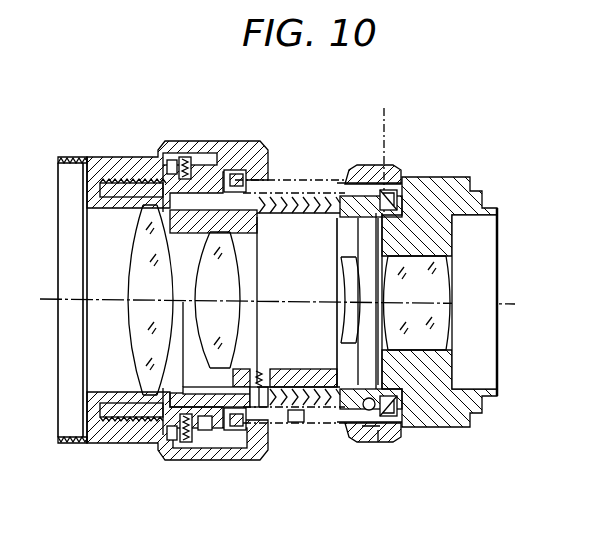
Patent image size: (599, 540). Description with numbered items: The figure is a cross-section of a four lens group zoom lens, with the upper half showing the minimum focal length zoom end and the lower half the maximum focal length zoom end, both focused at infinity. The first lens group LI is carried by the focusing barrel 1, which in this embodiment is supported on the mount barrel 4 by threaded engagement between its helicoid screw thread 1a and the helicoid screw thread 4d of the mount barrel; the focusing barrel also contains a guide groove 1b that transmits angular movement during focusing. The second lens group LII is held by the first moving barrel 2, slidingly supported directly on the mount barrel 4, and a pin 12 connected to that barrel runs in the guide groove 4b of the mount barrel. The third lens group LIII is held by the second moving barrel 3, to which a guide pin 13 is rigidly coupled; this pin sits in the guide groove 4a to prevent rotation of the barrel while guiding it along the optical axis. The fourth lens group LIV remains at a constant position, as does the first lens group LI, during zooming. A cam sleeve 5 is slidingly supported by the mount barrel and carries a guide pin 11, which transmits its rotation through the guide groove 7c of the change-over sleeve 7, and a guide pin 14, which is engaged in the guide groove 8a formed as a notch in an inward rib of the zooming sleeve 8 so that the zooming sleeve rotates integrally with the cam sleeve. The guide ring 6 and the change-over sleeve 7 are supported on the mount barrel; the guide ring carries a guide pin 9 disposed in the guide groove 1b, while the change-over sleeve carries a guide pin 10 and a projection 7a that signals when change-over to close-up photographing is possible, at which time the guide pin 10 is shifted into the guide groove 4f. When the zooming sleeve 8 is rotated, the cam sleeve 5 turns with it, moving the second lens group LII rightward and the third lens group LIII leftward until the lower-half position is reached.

The focusing ring 1 is at (60, 157).
The helicoid screw thread 1a is at (152, 165).
The guide groove 1b is at (215, 148).
The first moving sleeve 2 is at (257, 236).
The second moving sleeve 3 is at (337, 245).
The mount barrel 4 is at (445, 177).
The guide groove 4a is at (362, 168).
The guide groove 4b is at (203, 389).
The helicoid screw thread 4d is at (110, 181).
The guide groove 4f is at (235, 428).
The cam sleeve 5 is at (340, 196).
The guide ring 6 is at (172, 160).
The change-over sleeve 7 is at (305, 180).
The projection 7a is at (205, 430).
The guide groove 7c is at (247, 172).
The zooming sleeve 8 is at (392, 190).
The guide groove 8a is at (369, 425).
The guide pin 9 is at (186, 157).
The guide pin 10 is at (241, 170).
The guide pin 11 is at (277, 194).
The guide pin 12 is at (297, 423).
The guide pin 13 is at (392, 151).
The guide pin 14 is at (378, 443).
The first lens group LI is at (132, 242).
The second lens group LII is at (243, 318).
The third lens group LIII is at (338, 333).
The fourth lens group LIV is at (418, 256).